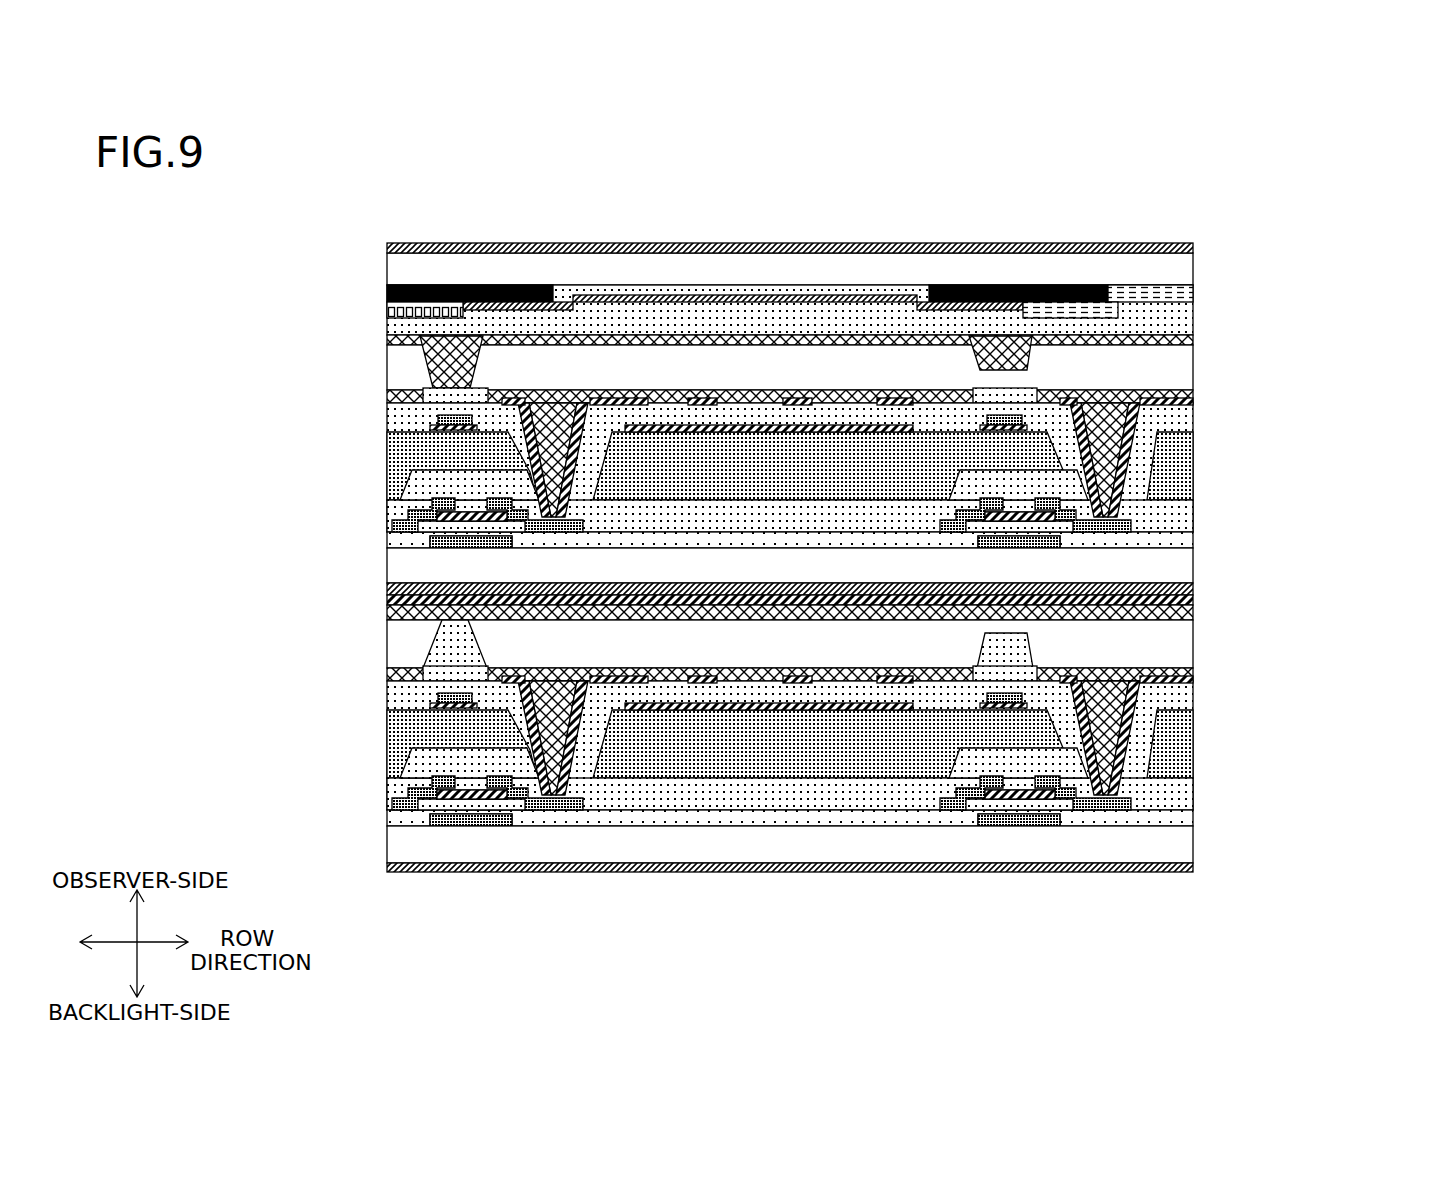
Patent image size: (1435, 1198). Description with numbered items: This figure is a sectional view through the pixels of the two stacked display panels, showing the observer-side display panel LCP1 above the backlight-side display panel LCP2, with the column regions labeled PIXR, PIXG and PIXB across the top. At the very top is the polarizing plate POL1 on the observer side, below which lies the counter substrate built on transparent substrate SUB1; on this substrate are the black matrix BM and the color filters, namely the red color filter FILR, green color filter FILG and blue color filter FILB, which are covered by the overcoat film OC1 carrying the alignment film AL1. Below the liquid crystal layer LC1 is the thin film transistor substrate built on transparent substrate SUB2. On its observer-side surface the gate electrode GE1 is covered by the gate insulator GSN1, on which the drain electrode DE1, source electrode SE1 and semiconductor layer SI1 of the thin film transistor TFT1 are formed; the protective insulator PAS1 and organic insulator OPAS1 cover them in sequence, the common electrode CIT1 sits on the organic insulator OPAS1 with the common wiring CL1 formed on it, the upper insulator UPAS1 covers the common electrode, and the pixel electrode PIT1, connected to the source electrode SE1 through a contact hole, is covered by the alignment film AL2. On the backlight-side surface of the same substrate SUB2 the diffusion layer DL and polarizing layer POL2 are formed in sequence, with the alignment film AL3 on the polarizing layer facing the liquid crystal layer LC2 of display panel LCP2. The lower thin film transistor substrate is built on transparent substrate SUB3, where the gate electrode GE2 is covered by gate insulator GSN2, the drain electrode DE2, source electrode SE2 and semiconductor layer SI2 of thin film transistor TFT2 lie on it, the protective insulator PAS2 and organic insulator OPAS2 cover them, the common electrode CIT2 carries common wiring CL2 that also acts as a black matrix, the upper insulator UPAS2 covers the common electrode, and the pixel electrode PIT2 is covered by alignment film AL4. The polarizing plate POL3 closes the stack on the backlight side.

The polarizing plate POL1 is at (1194, 247).
The transparent substrate SUB1 is at (1194, 268).
The black matrix BM is at (387, 292).
The green color filter FILG is at (742, 295).
The red color filter FILR is at (387, 310).
The blue color filter FILB is at (1194, 293).
The overcoat film OC1 is at (1194, 322).
The alignment film AL1 is at (1194, 340).
The liquid crystal layer LC1 is at (1194, 366).
The alignment film AL2 is at (1194, 396).
The pixel electrode PIT1 is at (1194, 402).
The common electrode CIT1 is at (428, 428).
The common wiring CL1 is at (436, 418).
The upper insulator UPAS1 is at (1194, 415).
The organic insulator OPAS1 is at (1194, 476).
The semiconductor layer SI1 is at (468, 512).
The drain electrode DE1 is at (392, 525).
The source electrode SE1 is at (556, 535).
The gate electrode GE1 is at (456, 550).
The protective insulator PAS1 is at (1194, 515).
The gate insulator GSN1 is at (1194, 540).
The thin film transistor TFT1 is at (412, 569).
The transparent substrate SUB2 is at (1194, 565).
The polarizing layer POL2 is at (1194, 590).
The diffusion layer DL is at (387, 600).
The alignment film AL3 is at (1194, 612).
The liquid crystal layer LC2 is at (1194, 642).
The alignment film AL4 is at (1194, 675).
The pixel electrode PIT2 is at (1194, 680).
The common electrode CIT2 is at (428, 705).
The common wiring CL2 is at (436, 694).
The upper insulator UPAS2 is at (1194, 695).
The organic insulator OPAS2 is at (1194, 750).
The semiconductor layer SI2 is at (480, 799).
The drain electrode DE2 is at (405, 811).
The source electrode SE2 is at (548, 811).
The gate electrode GE2 is at (450, 827).
The protective insulator PAS2 is at (1194, 795).
The gate insulator GSN2 is at (1194, 818).
The thin film transistor TFT2 is at (570, 967).
The transparent substrate SUB3 is at (1194, 845).
The polarizing plate POL3 is at (1194, 868).
The display panel LCP1 is at (1328, 243).
The display panel LCP2 is at (272, 393).
The red pixel PIXR is at (462, 202).
The green pixel PIXG is at (1022, 202).
The blue pixel PIXB is at (1027, 202).